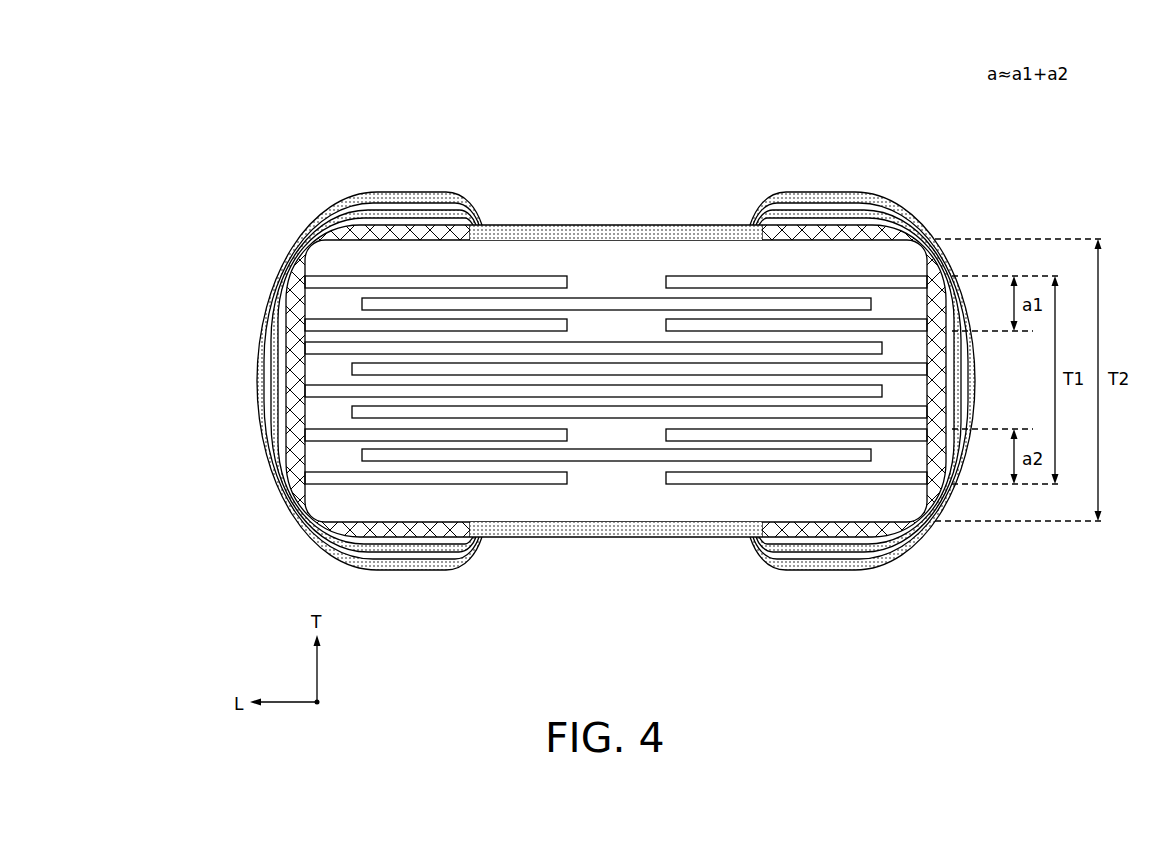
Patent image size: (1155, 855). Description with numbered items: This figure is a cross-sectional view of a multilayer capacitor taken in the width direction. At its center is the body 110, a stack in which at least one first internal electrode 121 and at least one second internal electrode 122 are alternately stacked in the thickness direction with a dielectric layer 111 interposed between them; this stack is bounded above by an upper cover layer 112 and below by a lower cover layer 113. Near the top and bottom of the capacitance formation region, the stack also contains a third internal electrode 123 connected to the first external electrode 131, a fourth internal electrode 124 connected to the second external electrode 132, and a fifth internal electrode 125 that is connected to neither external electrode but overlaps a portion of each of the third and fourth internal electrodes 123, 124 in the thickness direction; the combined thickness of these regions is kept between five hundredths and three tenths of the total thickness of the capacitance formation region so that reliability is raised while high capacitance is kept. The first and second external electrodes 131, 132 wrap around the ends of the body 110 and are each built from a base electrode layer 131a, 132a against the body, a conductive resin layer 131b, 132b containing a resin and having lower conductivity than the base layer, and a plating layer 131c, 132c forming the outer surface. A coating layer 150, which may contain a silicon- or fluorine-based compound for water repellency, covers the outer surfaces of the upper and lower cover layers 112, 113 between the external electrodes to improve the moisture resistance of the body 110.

The body 110 is at (713, 232).
The dielectric layer 111 is at (653, 357).
The upper cover layer 112 is at (493, 258).
The lower cover layer 113 is at (577, 497).
The first internal electrode 121 is at (577, 348).
The second internal electrode 122 is at (615, 368).
The third internal electrode 123 is at (397, 478).
The fourth internal electrode 124 is at (850, 478).
The fifth internal electrode 125 is at (623, 458).
The first external electrode 131 is at (510, 302).
The base electrode layer 131a is at (262, 333).
The conductive resin layer 131b is at (273, 361).
The plating layer 131c is at (290, 390).
The second external electrode 132 is at (897, 302).
The base electrode layer 132a is at (976, 356).
The conductive resin layer 132b is at (963, 380).
The plating layer 132c is at (949, 405).
The coating layer 150 is at (673, 528).